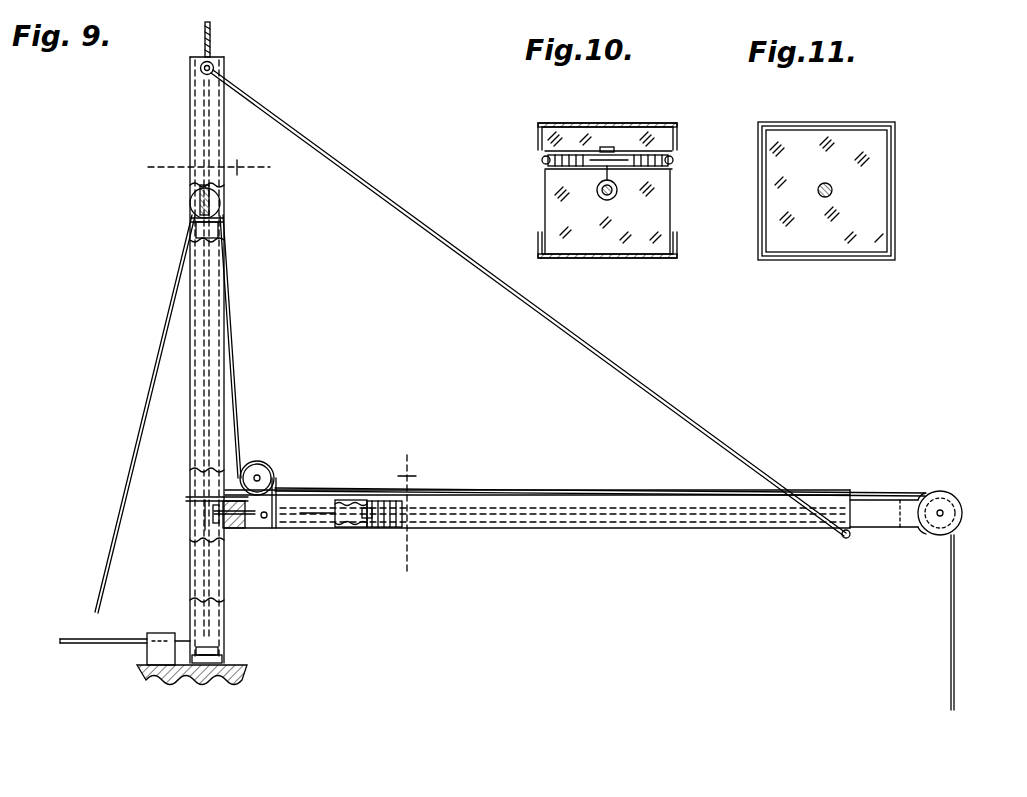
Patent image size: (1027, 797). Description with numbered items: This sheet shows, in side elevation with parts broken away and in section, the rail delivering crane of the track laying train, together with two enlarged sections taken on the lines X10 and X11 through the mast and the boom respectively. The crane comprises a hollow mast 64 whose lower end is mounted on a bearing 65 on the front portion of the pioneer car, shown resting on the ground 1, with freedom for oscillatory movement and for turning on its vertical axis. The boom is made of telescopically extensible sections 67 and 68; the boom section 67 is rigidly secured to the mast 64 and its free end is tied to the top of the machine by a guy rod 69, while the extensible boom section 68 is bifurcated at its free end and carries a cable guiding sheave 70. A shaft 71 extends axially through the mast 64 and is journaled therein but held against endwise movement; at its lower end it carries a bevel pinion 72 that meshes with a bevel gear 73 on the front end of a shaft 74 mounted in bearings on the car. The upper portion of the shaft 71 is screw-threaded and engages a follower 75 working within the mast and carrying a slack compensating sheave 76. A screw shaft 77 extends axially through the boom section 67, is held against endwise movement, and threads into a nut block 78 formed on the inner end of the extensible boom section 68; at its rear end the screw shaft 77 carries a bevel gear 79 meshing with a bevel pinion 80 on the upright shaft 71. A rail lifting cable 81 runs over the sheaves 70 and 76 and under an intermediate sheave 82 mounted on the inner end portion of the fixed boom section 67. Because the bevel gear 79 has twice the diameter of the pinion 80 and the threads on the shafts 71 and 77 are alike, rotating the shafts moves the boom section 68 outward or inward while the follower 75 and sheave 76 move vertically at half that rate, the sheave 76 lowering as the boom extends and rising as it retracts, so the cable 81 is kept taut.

In FIG. 9, the ground / floor 1 is at (233, 680).
In FIG. 9, the hollow mast 64 is at (213, 398).
In FIG. 10, the hollow mast 64 is at (632, 124).
In FIG. 9, the bearing 65 is at (223, 659).
In FIG. 9, the boom section 67 is at (352, 495).
In FIG. 11, the boom section 67 is at (760, 178).
In FIG. 9, the extensible boom section 68 is at (884, 520).
In FIG. 11, the extensible boom section 68 is at (766, 224).
In FIG. 9, the guy rod 69 is at (603, 362).
In FIG. 9, the cable guiding sheave 70 is at (952, 510).
In FIG. 9, the shaft 71 is at (212, 34).
In FIG. 10, the shaft 71 is at (602, 192).
In FIG. 9, the bevel pinion 72 is at (212, 648).
In FIG. 9, the bevel gear 73 is at (190, 630).
In FIG. 9, the shaft 74 is at (98, 646).
In FIG. 9, the follower 75 is at (226, 219).
In FIG. 10, the follower 75 is at (552, 215).
In FIG. 9, the slack compensating sheave 76 is at (197, 200).
In FIG. 10, the slack compensating sheave 76 is at (552, 168).
In FIG. 9, the screw shaft 77 is at (352, 527).
In FIG. 11, the screw shaft 77 is at (832, 191).
In FIG. 9, the nut block 78 is at (377, 530).
In FIG. 9, the bevel gear 79 is at (214, 512).
In FIG. 9, the bevel pinion 80 is at (186, 499).
In FIG. 9, the rail lifting cable 81 is at (138, 415).
In FIG. 10, the rail lifting cable 81 is at (541, 159).
In FIG. 9, the intermediate sheave 82 is at (268, 466).
In FIG. 9, the section line x10 x10 X10 is at (208, 165).
In FIG. 9, the section line x11 x11 X11 is at (410, 503).